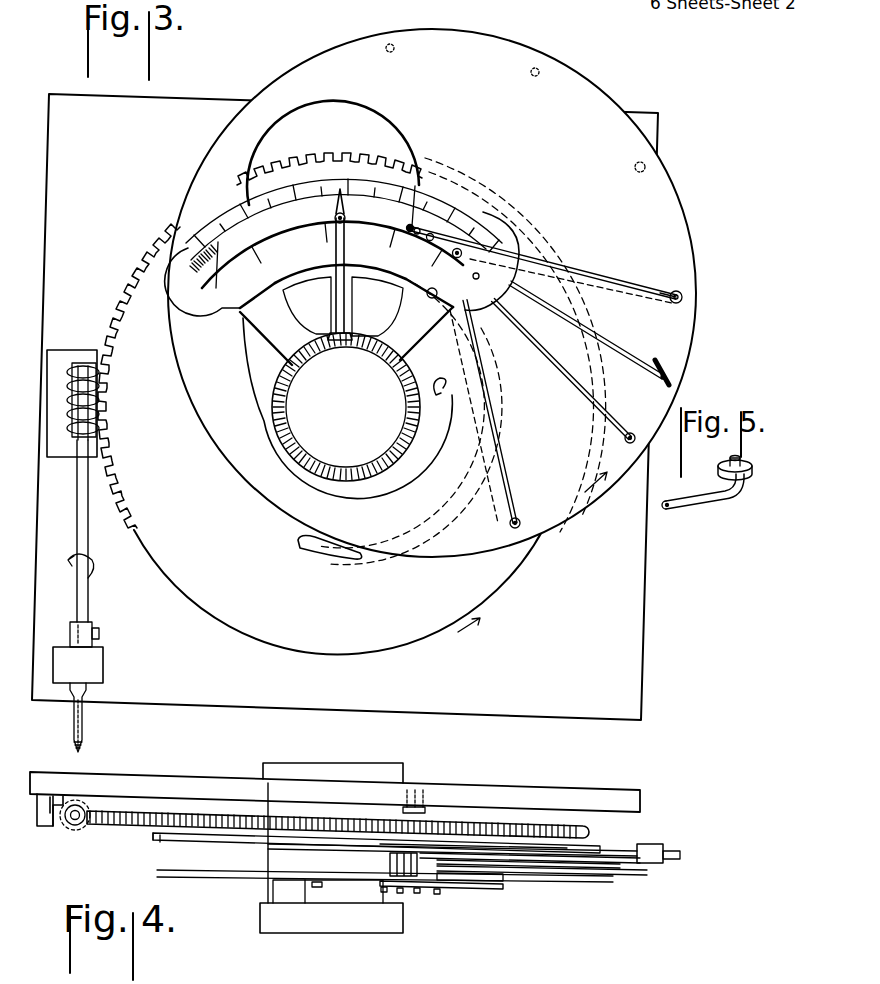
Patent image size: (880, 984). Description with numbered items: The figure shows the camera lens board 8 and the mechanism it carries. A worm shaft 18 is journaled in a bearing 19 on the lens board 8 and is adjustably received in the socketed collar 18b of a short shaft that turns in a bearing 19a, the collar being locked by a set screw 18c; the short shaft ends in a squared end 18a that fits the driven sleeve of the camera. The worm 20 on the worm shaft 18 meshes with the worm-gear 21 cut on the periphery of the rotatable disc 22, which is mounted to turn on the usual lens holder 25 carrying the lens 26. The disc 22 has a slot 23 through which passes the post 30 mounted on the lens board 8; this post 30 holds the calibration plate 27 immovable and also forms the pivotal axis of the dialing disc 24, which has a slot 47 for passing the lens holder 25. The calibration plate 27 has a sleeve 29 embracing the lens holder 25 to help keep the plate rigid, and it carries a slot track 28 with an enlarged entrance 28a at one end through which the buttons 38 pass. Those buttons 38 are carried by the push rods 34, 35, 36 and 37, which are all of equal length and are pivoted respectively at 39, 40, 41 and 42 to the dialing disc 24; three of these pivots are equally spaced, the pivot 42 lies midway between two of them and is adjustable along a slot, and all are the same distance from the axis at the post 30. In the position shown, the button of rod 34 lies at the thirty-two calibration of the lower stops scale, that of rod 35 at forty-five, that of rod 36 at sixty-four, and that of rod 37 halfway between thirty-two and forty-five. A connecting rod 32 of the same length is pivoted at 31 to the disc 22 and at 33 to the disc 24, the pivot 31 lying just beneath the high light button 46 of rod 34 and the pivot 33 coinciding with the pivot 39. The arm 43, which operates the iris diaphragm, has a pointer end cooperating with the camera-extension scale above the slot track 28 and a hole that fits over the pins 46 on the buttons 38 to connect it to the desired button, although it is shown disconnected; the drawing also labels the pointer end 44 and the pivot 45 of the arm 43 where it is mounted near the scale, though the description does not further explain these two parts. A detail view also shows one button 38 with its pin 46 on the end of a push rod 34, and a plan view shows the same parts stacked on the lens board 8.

In FIG. 3, the lens board 8 is at (632, 646).
In FIG. 4, the lens board 8 is at (606, 798).
In FIG. 3, the worm shaft 18 is at (88, 596).
In FIG. 4, the worm shaft 18 is at (68, 830).
In FIG. 3, the squared end of short shaft 18a is at (84, 716).
In FIG. 3, the socketed collar 18b is at (70, 628).
In FIG. 3, the set screw 18c is at (100, 633).
In FIG. 3, the bearing 19 is at (62, 352).
In FIG. 4, the bearing 19 is at (45, 826).
In FIG. 3, the bearing 19a is at (103, 665).
In FIG. 3, the worm 20 is at (100, 400).
In FIG. 4, the worm 20 is at (76, 827).
In FIG. 3, the worm-gear 21 is at (110, 456).
In FIG. 4, the worm-gear 21 is at (585, 832).
In FIG. 3, the rotatable disc 22 is at (236, 622).
In FIG. 4, the rotatable disc 22 is at (533, 827).
In FIG. 3, the slot 23 is at (299, 540).
In FIG. 3, the dialing disc 24 is at (686, 244).
In FIG. 4, the dialing disc 24 is at (185, 840).
In FIG. 3, the lens holder 25 is at (385, 448).
In FIG. 4, the lens holder 25 is at (286, 917).
In FIG. 3, the lens 26 is at (366, 422).
In FIG. 3, the calibration plate 27 is at (212, 318).
In FIG. 4, the calibration plate 27 is at (217, 870).
In FIG. 3, the slot track 28 is at (176, 296).
In FIG. 3, the enlarged entrance 28a is at (477, 280).
In FIG. 4, the sleeve 29 is at (268, 857).
In FIG. 3, the post 30 is at (431, 300).
In FIG. 4, the post 30 is at (433, 827).
In FIG. 4, the pivot 31 is at (367, 813).
In FIG. 3, the connecting rod 32 is at (645, 294).
In FIG. 4, the connecting rod 32 is at (617, 846).
In FIG. 3, the pivot 33 is at (682, 294).
In FIG. 4, the pivot 33 is at (680, 853).
In FIG. 3, the push rod 34 is at (618, 285).
In FIG. 5, the push rod 34 is at (700, 505).
In FIG. 4, the push rod 34 is at (655, 848).
In FIG. 3, the push rod 35 is at (562, 345).
In FIG. 4, the push rod 35 is at (594, 872).
In FIG. 3, the push rod 36 is at (500, 446).
In FIG. 4, the push rod 36 is at (505, 878).
In FIG. 3, the push rod 37 is at (636, 360).
In FIG. 4, the push rod 37 is at (628, 875).
In FIG. 3, the button 38 is at (461, 250).
In FIG. 5, the button 38 is at (754, 473).
In FIG. 4, the button 38 is at (445, 889).
In FIG. 3, the pivot 39 is at (684, 297).
In FIG. 3, the pivot 40 is at (625, 441).
In FIG. 3, the pivot 41 is at (521, 527).
In FIG. 3, the pivot 42 is at (670, 378).
In FIG. 3, the arm 43 is at (342, 297).
In FIG. 4, the arm 43 is at (312, 888).
In FIG. 3, the pointer tip 44 is at (342, 192).
In FIG. 4, the pointer tip 44 is at (320, 888).
In FIG. 3, the pointer pivot 45 is at (343, 214).
In FIG. 3, the pin 46 is at (412, 225).
In FIG. 5, the pin 46 is at (742, 461).
In FIG. 4, the pin 46 is at (437, 894).
In FIG. 3, the slot 47 is at (444, 384).